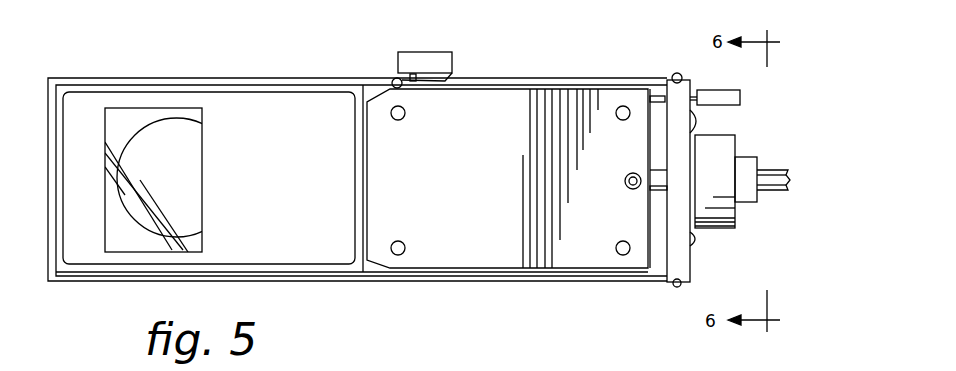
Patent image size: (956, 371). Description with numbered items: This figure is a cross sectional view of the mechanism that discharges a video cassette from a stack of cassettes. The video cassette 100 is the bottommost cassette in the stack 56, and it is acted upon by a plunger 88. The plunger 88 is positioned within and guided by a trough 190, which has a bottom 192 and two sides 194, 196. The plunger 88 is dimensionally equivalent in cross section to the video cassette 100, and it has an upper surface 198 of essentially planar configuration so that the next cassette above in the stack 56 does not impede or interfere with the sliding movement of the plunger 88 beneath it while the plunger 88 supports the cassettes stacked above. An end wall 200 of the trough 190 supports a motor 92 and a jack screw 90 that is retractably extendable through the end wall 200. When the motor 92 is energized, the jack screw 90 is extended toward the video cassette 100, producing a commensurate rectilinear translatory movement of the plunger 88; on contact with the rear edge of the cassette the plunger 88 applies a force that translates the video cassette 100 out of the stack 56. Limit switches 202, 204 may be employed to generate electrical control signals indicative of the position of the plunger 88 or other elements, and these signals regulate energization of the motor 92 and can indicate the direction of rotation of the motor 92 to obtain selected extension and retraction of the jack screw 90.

The stack 56 is at (371, 82).
The plunger 88 is at (512, 238).
The jack screw 90 is at (787, 192).
The motor 92 is at (737, 134).
The video cassette 100 is at (298, 245).
The trough 190 is at (616, 286).
The bottom 192 is at (660, 262).
The side 194 is at (568, 283).
The side 196 is at (492, 80).
The upper surface 198 is at (452, 230).
The end wall 200 is at (683, 266).
The limit switch 202 is at (445, 52).
The limit switch 204 is at (710, 90).